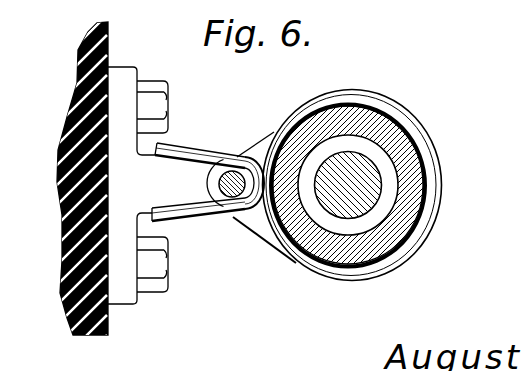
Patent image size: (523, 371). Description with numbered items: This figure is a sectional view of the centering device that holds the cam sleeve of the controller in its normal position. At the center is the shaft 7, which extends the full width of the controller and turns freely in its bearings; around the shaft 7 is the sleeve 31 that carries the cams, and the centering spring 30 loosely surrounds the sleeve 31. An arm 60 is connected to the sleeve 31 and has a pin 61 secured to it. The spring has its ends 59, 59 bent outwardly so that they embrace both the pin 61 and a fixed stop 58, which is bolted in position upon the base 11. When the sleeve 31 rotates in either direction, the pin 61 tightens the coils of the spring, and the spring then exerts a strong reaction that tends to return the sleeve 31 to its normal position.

The base 11 is at (58, 180).
The fixed stop 58 is at (216, 197).
The ends of centering spring 59 is at (198, 147).
The arm 60 is at (260, 224).
The pin 61 is at (229, 214).
The centering spring 30 is at (350, 102).
The sleeve 31 is at (355, 120).
The shaft 7 is at (355, 165).